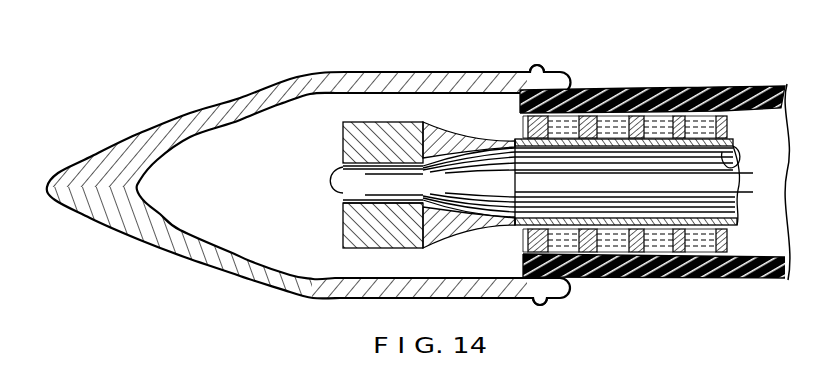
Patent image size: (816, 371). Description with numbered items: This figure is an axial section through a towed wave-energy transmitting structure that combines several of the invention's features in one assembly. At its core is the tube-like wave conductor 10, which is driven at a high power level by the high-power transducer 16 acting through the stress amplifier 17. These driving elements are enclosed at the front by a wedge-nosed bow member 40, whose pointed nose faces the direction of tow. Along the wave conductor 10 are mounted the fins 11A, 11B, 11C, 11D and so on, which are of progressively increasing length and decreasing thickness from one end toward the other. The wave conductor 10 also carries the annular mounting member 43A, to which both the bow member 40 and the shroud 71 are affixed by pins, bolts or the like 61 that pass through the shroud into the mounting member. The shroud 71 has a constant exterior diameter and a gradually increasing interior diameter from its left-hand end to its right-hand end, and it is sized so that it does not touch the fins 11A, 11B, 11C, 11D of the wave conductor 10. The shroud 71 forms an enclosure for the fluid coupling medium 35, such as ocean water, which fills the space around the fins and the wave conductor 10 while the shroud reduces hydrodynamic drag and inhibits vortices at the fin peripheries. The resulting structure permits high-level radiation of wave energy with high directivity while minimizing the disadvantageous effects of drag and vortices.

The bow member 40 is at (250, 86).
The pins, bolts or the like 61 is at (541, 66).
The high-power transducer 16 is at (343, 137).
The stress amplifier 17 is at (450, 121).
The wave conductor 10 is at (738, 170).
The mounting member 43A is at (604, 88).
The fin 11A is at (653, 87).
The fin 11B is at (693, 87).
The fin 11C is at (703, 87).
The fin 11D is at (735, 105).
The shroud 71 is at (654, 278).
The fluid coupling medium 35 is at (707, 247).